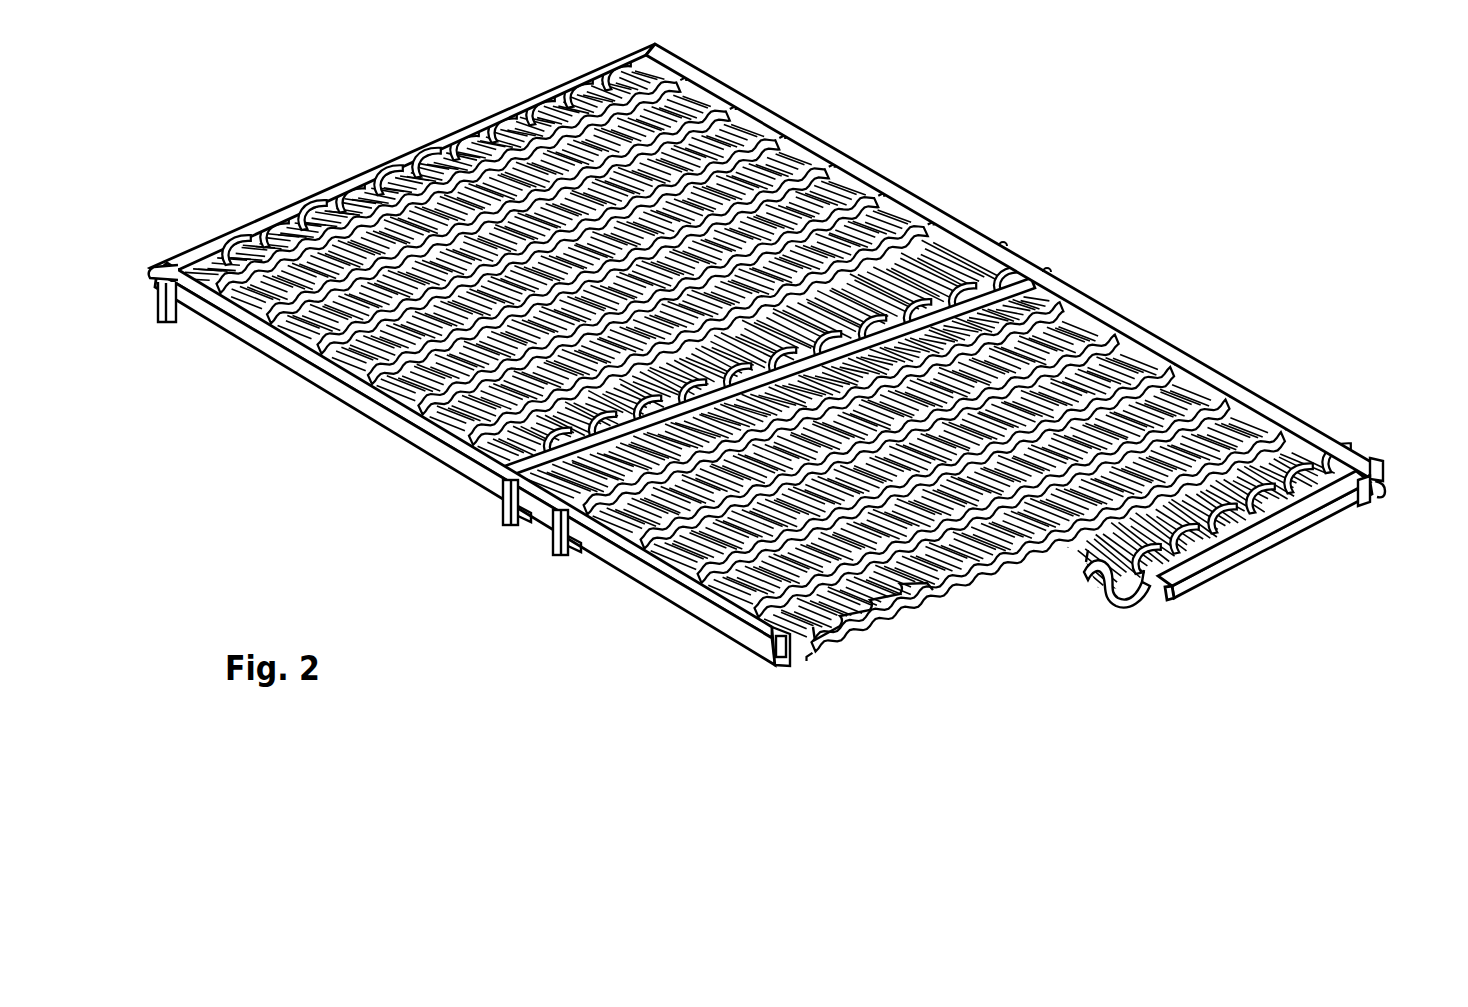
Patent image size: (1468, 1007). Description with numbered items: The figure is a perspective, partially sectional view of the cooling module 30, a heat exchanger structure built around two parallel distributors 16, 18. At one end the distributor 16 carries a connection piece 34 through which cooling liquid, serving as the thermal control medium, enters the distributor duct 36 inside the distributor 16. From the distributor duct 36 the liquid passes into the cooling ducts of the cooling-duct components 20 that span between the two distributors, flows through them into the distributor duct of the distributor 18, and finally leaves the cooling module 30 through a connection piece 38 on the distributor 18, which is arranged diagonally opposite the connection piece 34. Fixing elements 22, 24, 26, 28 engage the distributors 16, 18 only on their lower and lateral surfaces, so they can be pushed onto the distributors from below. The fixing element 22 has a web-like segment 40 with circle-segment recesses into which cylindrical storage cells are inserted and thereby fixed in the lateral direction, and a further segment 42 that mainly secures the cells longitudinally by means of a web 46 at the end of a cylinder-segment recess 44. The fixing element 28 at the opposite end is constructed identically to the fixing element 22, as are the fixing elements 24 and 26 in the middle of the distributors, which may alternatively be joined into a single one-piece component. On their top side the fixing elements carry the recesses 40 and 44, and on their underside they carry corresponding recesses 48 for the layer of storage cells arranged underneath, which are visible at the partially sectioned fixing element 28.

The distributor 16 is at (681, 598).
The distributor 18 is at (1086, 300).
The cooling-duct components 20 is at (870, 608).
The fixing element 22 is at (160, 313).
The fixing element 24 is at (502, 506).
The fixing element 26 is at (556, 550).
The fixing element 28 is at (1362, 496).
The cooling module 30 is at (902, 163).
The connection piece 34 is at (158, 264).
The distributor duct 36 is at (787, 660).
The connection piece 38 is at (1390, 490).
The segment 40 is at (240, 240).
The segment 42 is at (306, 205).
The recess 44 is at (421, 151).
The web 46 is at (386, 166).
The recesses 48 is at (1154, 606).